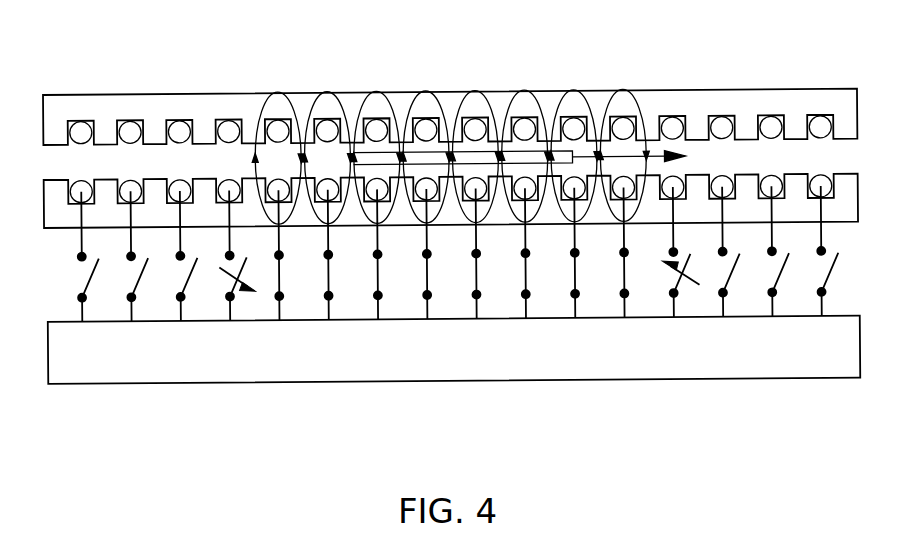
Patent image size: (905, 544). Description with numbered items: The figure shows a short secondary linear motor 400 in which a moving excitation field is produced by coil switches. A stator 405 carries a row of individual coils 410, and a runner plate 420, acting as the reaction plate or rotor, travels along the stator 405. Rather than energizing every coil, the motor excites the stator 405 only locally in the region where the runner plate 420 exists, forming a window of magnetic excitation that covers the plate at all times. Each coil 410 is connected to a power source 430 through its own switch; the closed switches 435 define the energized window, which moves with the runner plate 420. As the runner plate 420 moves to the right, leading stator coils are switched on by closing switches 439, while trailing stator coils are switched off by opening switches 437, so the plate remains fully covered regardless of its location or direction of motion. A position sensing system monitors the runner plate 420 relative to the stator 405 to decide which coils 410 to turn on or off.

The short secondary linear motor 400 is at (131, 47).
The stator 405 is at (178, 108).
The coils 410 is at (718, 126).
The runner plate 420 is at (497, 128).
The power source 430 is at (300, 362).
The closed switches 435 is at (428, 280).
The switches 437 is at (228, 299).
The switches 439 is at (722, 294).